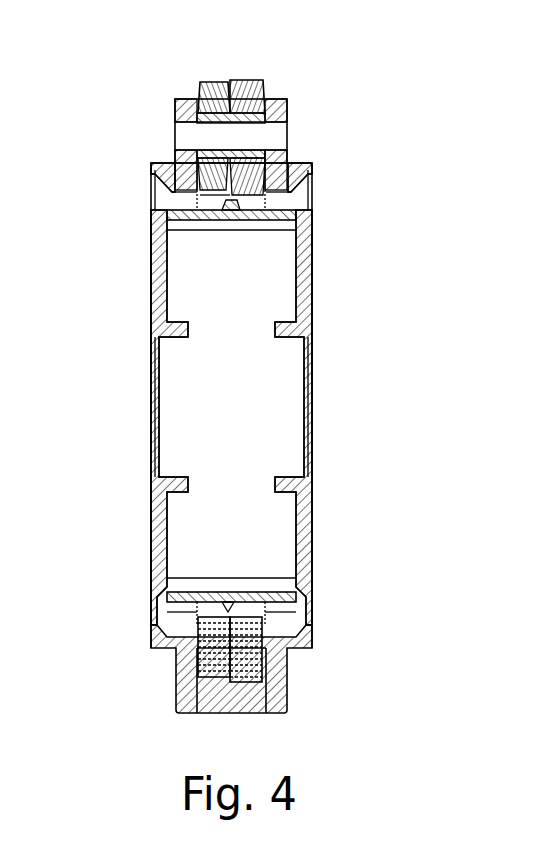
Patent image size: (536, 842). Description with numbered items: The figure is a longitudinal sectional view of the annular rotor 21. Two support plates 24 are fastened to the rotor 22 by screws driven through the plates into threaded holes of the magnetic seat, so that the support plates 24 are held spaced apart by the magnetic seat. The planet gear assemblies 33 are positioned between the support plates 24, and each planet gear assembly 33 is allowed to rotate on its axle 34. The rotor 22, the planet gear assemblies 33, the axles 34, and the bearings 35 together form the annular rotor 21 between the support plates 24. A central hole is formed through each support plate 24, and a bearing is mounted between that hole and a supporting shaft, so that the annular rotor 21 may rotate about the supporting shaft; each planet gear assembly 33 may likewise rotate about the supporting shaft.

The annular rotor 21 is at (232, 357).
The rotor 22 is at (256, 222).
The support plate 24 is at (162, 254).
The planet gear assembly 33 is at (214, 82).
The axle 34 is at (197, 137).
The bearing 35 is at (233, 122).